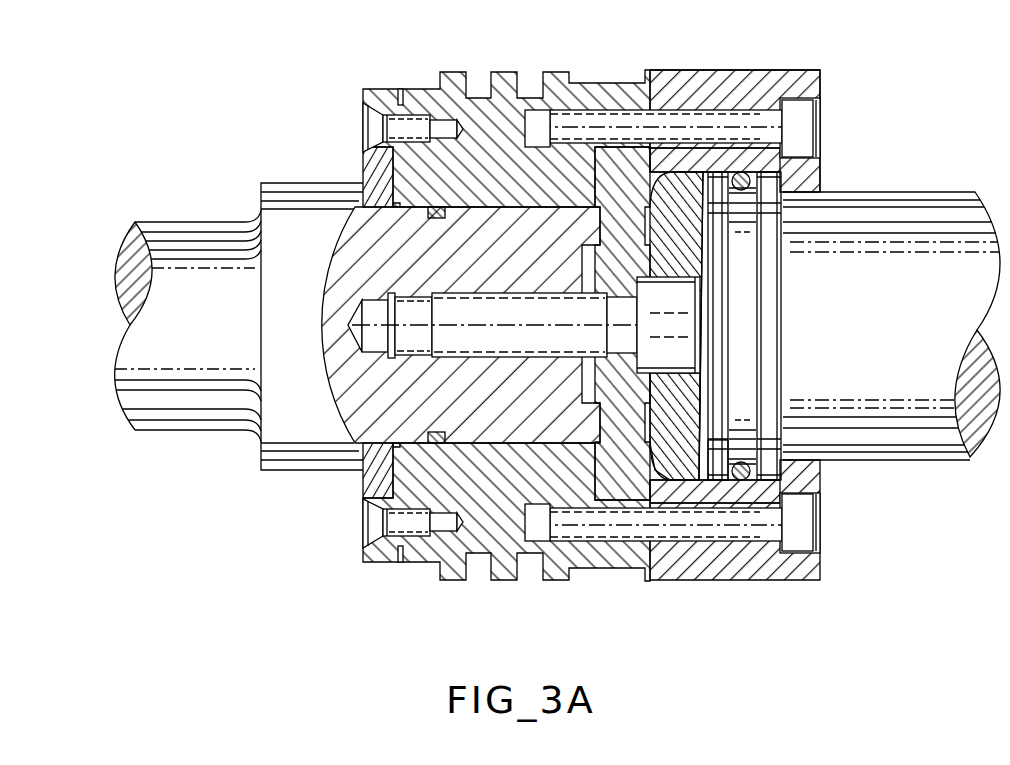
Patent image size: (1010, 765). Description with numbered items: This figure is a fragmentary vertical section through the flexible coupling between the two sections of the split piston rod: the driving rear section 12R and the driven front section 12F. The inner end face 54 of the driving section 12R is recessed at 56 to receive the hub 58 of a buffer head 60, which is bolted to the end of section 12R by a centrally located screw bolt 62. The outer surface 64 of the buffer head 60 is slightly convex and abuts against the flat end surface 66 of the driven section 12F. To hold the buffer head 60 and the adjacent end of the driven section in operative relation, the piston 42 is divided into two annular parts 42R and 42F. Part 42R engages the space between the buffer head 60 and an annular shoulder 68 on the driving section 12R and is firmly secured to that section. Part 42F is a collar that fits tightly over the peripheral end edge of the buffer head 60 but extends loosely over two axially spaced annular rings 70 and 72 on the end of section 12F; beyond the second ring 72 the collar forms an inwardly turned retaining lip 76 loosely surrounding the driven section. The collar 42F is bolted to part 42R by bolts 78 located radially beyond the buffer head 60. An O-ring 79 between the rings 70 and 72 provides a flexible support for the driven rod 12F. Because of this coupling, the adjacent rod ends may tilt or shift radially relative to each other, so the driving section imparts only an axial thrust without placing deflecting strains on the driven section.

The rear piston rod section 12R is at (188, 326).
The front piston rod section 12F is at (891, 326).
The piston 42 is at (825, 46).
The rear piston part 42R is at (475, 121).
The front piston part 42F is at (817, 83).
The inner end face 54 is at (648, 227).
The recess 56 is at (597, 247).
The hub 58 is at (611, 400).
The buffer head 60 is at (705, 393).
The screw bolt 62 is at (690, 333).
The outer surface 64 is at (703, 440).
The flat end surface 66 is at (697, 183).
The annular shoulder 68 is at (296, 186).
The first annular ring 70 is at (720, 480).
The second annular ring 72 is at (772, 287).
The retaining lip 76 is at (817, 174).
The bolts 78 is at (807, 133).
The O-ring 79 is at (743, 484).